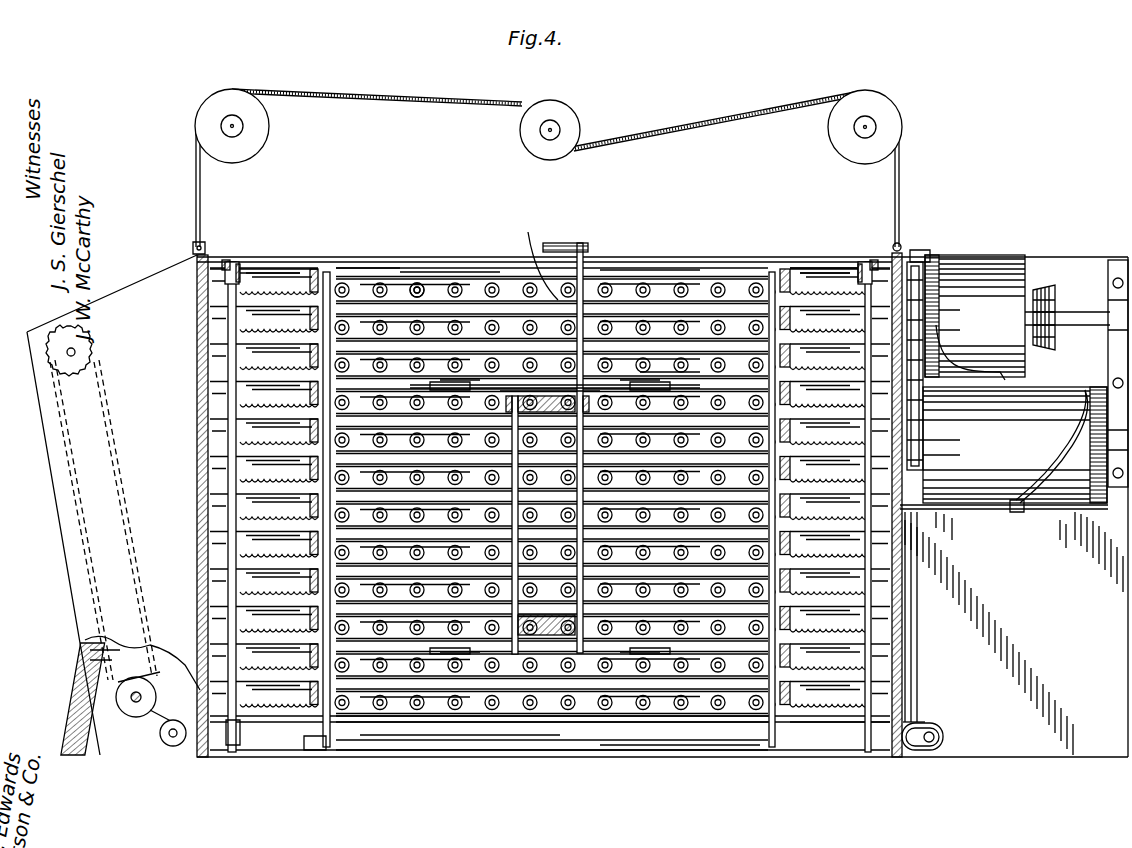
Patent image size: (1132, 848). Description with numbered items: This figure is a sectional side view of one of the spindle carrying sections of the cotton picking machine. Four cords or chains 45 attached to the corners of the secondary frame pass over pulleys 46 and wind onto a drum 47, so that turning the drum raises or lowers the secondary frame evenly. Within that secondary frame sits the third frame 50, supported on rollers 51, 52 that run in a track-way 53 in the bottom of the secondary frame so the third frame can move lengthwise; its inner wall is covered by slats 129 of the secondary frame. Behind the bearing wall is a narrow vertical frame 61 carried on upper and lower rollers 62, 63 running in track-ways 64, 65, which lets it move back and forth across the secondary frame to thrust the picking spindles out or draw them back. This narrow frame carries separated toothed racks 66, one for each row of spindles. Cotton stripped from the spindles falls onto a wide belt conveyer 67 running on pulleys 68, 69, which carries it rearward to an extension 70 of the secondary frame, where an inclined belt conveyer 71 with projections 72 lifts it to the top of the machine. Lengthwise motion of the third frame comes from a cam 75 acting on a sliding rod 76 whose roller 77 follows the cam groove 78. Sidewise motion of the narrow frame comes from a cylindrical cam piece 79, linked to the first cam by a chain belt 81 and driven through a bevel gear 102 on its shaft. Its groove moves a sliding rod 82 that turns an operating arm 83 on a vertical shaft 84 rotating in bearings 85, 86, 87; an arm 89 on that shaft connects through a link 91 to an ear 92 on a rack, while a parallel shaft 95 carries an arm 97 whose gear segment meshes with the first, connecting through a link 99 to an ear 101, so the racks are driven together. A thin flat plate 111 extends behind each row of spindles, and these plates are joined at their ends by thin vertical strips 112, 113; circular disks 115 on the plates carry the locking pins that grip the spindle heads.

The cords or chains 45 is at (432, 100).
The pulleys 46 is at (204, 130).
The drum 47 is at (570, 132).
The third frame 50 is at (210, 590).
The roller 51 is at (780, 740).
The roller 52 is at (372, 744).
The track-way 53 is at (548, 748).
The narrow vertical frame 61 is at (228, 488).
The roller 62 is at (245, 270).
The roller 63 is at (318, 740).
The track-way 64 is at (226, 262).
The track-way 65 is at (230, 748).
The toothed racks 66 is at (240, 636).
The belt conveyer 67 is at (918, 724).
The pulley 68 is at (946, 737).
The pulley 69 is at (168, 748).
The extension 70 is at (128, 300).
The belt conveyer 71 is at (112, 462).
The projections 72 is at (142, 720).
The cam 75 is at (1015, 445).
The sliding rod 76 is at (992, 512).
The roller 77 is at (1024, 510).
The cam groove 78 is at (1090, 392).
The cylindrical cam piece 79 is at (975, 316).
The chain belt 81 is at (926, 280).
The sliding rod 82 is at (730, 270).
The operating arm 83 is at (560, 243).
The vertical shaft 84 is at (536, 256).
The bearing 85 is at (592, 270).
The bearing 86 is at (552, 414).
The bearing 87 is at (552, 616).
The arm 89 is at (626, 762).
The link 91 is at (694, 762).
The ear 92 is at (680, 362).
The shaft 95 is at (514, 656).
The arm 97 is at (462, 762).
The link 99 is at (420, 762).
The ear 101 is at (430, 376).
The bevel gear 102 is at (1052, 290).
The thin flat plate 111 is at (496, 278).
The thin vertical strip 112 is at (352, 278).
The thin vertical strip 113 is at (760, 290).
The circular disks 115 is at (418, 280).
The slats 129 is at (100, 346).